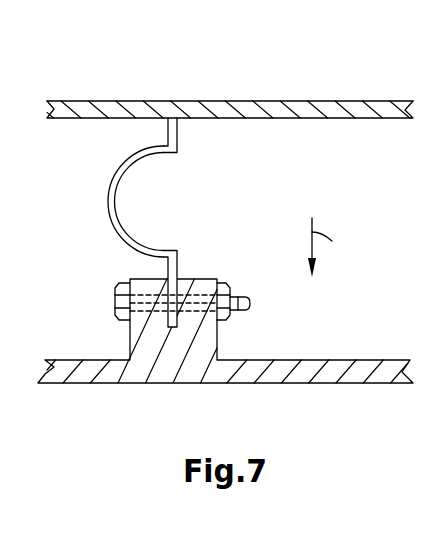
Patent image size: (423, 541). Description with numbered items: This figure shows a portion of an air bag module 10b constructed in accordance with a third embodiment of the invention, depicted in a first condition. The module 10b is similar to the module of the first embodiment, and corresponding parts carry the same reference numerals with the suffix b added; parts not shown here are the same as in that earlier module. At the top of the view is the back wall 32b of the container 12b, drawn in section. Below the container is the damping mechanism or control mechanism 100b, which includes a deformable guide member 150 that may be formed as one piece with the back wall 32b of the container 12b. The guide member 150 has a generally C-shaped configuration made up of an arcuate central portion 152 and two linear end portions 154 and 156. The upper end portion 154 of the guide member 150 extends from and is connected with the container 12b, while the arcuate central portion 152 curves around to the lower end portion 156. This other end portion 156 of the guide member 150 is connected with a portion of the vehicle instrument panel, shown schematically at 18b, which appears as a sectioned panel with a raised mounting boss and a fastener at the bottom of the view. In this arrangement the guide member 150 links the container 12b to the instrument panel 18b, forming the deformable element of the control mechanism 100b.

The air bag module 10b is at (148, 74).
The container 12b is at (366, 88).
The back wall 32b is at (275, 101).
The vehicle instrument panel 18b is at (76, 398).
The damping mechanism or control mechanism 100b is at (304, 185).
The deformable guide member 150 is at (106, 152).
The arcuate central portion 152 is at (106, 198).
The end portion 154 is at (177, 132).
The end portion 156 is at (178, 258).